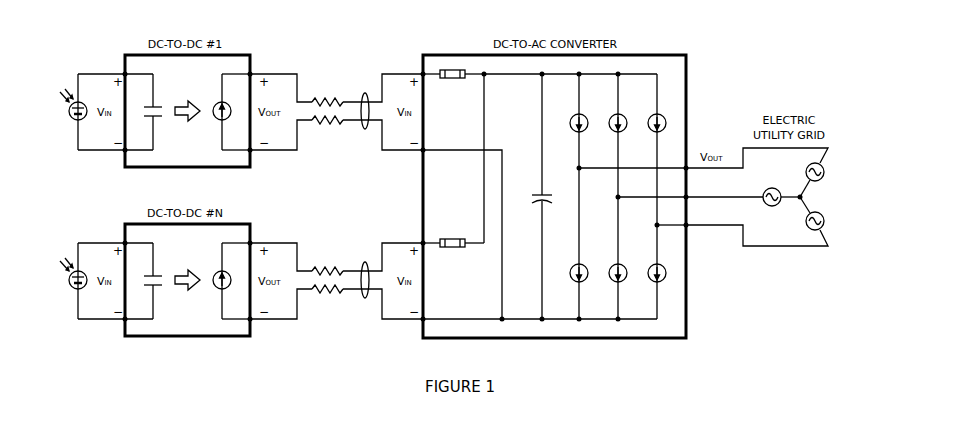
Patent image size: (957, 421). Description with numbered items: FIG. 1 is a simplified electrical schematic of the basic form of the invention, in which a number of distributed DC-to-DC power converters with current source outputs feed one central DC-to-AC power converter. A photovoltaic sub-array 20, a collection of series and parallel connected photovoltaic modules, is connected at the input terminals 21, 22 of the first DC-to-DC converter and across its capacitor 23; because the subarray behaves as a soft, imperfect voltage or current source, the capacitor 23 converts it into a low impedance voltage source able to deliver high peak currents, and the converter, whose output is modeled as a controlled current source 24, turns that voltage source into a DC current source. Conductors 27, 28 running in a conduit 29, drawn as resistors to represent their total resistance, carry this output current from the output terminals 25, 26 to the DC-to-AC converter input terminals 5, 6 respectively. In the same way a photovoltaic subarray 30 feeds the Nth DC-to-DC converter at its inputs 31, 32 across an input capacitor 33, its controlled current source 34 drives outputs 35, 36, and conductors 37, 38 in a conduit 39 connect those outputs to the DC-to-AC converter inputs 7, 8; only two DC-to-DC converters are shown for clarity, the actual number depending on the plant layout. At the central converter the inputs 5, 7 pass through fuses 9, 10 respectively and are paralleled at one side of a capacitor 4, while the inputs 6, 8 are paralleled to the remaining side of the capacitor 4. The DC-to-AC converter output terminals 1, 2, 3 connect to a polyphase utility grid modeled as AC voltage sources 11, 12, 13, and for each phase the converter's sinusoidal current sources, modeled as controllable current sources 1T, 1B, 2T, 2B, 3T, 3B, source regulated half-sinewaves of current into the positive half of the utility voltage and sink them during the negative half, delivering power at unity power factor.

The DC-to-AC converter output terminal 1 is at (692, 172).
The DC-to-AC converter output terminal 2 is at (692, 201).
The DC-to-AC converter output terminal 3 is at (692, 229).
The capacitor 4 is at (545, 206).
The DC-to-AC converter input terminal 5 is at (416, 71).
The DC-to-AC converter input terminal 6 is at (416, 160).
The DC-to-AC converter input 7 is at (416, 240).
The DC-to-AC converter input 8 is at (416, 329).
The fuse 9 is at (452, 80).
The fuse 10 is at (452, 249).
The AC voltage source 11 is at (828, 172).
The AC voltage source 12 is at (772, 187).
The AC voltage source 13 is at (828, 221).
The controllable current source 1T is at (572, 131).
The controllable current source 2T is at (611, 131).
The controllable current source 3T is at (650, 131).
The controllable current source 1B is at (572, 281).
The controllable current source 2B is at (611, 281).
The controllable current source 3B is at (650, 281).
The photovoltaic sub-array 20 is at (70, 125).
The input terminal 21 is at (122, 71).
The input terminal 22 is at (122, 158).
The capacitor 23 is at (157, 104).
The controlled current source 24 is at (215, 120).
The output terminal 25 is at (253, 71).
The output terminal 26 is at (253, 158).
The conductor 27 is at (326, 96).
The conductor 28 is at (326, 126).
The conduit 29 is at (365, 91).
The photovoltaic subarray 30 is at (70, 294).
The input 31 is at (122, 240).
The input 32 is at (122, 327).
The input capacitor 33 is at (157, 273).
The controlled current source 34 is at (215, 289).
The output 35 is at (253, 240).
The output 36 is at (253, 327).
The conductor 37 is at (326, 265).
The conductor 38 is at (326, 295).
The conduit 39 is at (365, 260).